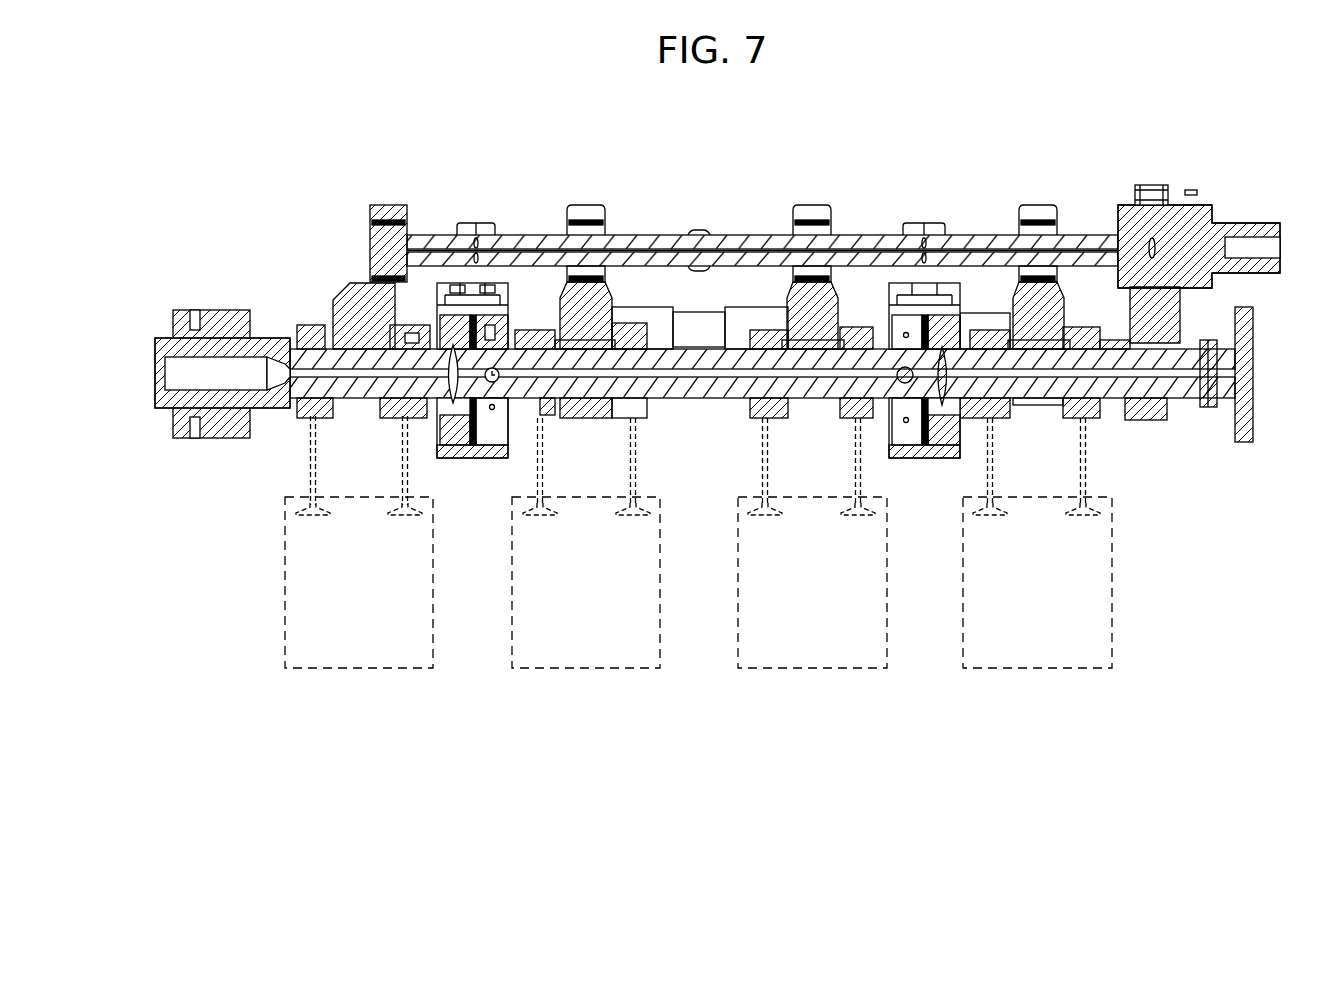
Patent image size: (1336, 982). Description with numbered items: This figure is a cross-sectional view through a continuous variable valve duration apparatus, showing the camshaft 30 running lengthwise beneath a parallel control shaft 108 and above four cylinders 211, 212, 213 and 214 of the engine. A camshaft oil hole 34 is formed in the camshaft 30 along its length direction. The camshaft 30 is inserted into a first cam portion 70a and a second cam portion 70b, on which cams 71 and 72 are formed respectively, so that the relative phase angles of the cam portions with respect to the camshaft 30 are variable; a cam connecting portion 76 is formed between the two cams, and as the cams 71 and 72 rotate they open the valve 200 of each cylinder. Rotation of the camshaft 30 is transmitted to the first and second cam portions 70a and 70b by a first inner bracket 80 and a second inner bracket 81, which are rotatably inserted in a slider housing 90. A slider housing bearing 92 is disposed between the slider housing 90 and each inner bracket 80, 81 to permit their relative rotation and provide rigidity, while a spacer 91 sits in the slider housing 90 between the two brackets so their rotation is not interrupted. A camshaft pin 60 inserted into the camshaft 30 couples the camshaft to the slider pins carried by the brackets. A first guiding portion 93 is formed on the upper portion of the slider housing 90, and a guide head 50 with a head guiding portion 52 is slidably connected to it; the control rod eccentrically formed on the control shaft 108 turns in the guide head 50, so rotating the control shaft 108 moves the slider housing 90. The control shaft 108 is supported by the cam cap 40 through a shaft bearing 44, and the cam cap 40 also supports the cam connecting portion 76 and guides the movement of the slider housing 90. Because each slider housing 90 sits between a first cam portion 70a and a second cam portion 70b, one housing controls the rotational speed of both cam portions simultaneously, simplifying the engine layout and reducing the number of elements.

The camshaft 30 is at (1100, 387).
The camshaft oil hole 34 is at (1110, 377).
The cam cap 40 is at (612, 203).
The shaft bearing 44 is at (583, 222).
The guide head 50 is at (478, 222).
The head guiding portion 52 is at (500, 290).
The camshaft pin 60 is at (498, 378).
The first cam portion 70a is at (362, 412).
The second cam portion 70b is at (593, 412).
The cam 71 is at (303, 327).
The cam 72 is at (415, 413).
The cam connecting portion 76 is at (348, 407).
The first inner bracket 80 is at (370, 268).
The second inner bracket 81 is at (475, 328).
The slider housing 90 is at (483, 448).
The spacer 91 is at (403, 227).
The slider housing bearing 92 is at (453, 443).
The first guiding portion 93 is at (462, 290).
The control shaft 108 is at (742, 240).
The valve 200 is at (312, 513).
The cylinder 211 is at (358, 670).
The cylinder 212 is at (585, 670).
The cylinder 213 is at (811, 670).
The cylinder 214 is at (1037, 670).